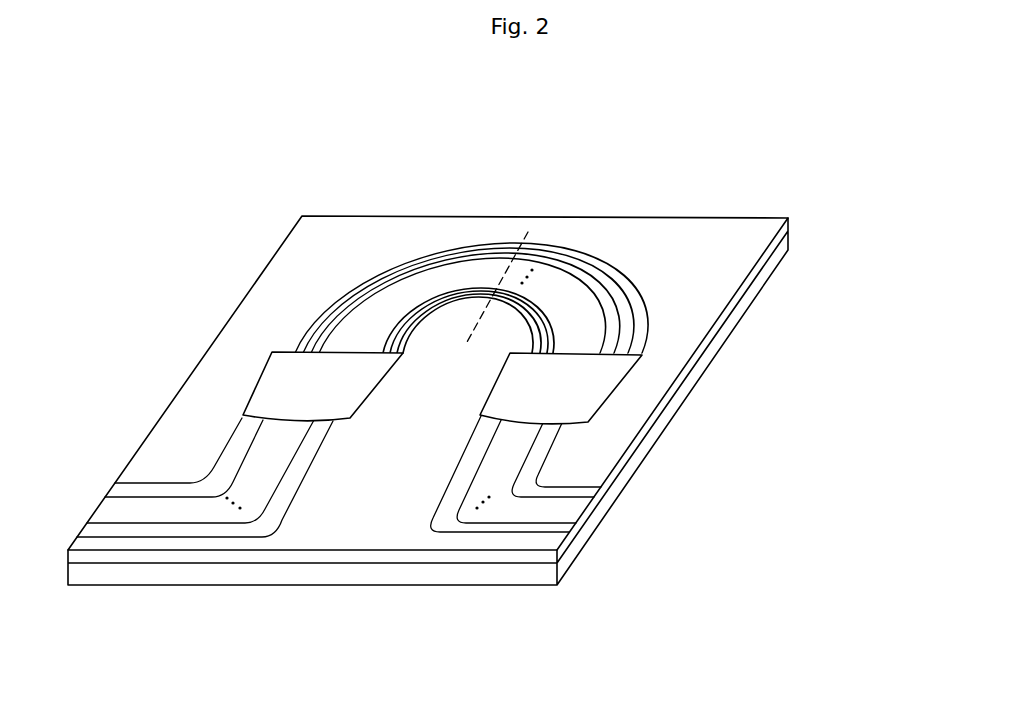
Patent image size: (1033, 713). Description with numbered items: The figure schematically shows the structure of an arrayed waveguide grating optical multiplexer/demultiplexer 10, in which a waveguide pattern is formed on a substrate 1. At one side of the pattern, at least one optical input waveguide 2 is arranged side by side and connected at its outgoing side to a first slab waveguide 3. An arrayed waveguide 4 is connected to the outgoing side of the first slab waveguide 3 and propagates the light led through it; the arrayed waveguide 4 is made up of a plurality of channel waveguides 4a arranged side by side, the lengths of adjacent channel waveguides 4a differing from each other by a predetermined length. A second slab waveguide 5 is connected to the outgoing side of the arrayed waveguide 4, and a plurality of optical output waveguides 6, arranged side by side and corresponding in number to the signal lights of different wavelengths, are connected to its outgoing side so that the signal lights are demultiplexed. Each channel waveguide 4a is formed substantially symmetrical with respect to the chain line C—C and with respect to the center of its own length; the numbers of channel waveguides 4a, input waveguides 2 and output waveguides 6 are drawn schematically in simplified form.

The substrate 1 is at (773, 267).
The optical input waveguide 2 is at (150, 483).
The first slab waveguide 3 is at (267, 384).
The arrayed waveguide 4 is at (501, 268).
The channel waveguide 4a is at (570, 250).
The second slab waveguide 5 is at (604, 375).
The optical output waveguide 6 is at (578, 487).
The device 10 is at (727, 232).